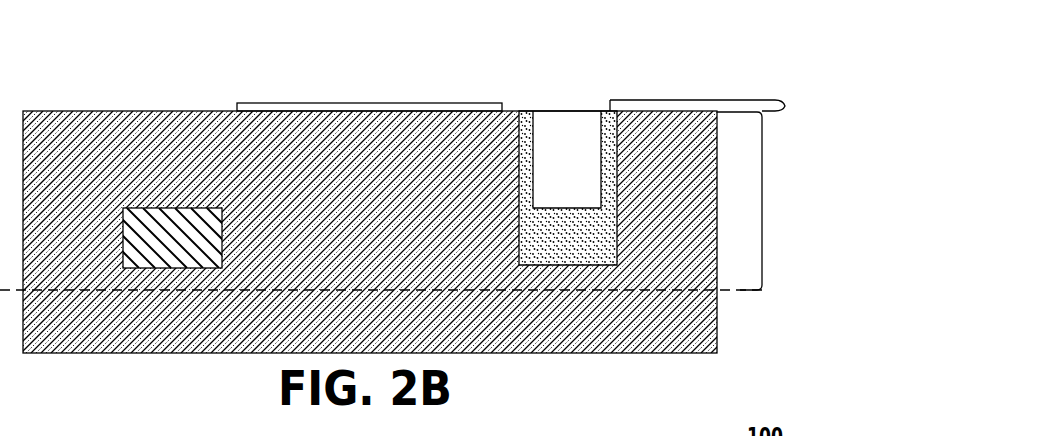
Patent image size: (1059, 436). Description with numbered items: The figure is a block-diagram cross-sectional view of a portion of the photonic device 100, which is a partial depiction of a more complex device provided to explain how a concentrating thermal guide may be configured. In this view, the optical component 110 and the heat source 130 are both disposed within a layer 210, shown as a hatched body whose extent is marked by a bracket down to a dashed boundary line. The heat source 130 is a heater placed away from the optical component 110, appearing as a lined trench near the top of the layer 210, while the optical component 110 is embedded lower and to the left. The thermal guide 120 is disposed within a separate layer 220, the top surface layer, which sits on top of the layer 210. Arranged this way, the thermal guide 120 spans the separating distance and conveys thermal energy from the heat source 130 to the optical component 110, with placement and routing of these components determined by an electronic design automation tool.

The photonic device 100 is at (479, 176).
The optical component 110 is at (152, 233).
The concentrating thermal guide 120 is at (365, 103).
The heat source 130 is at (572, 111).
The layer 210 is at (762, 200).
The top surface layer 220 is at (718, 107).